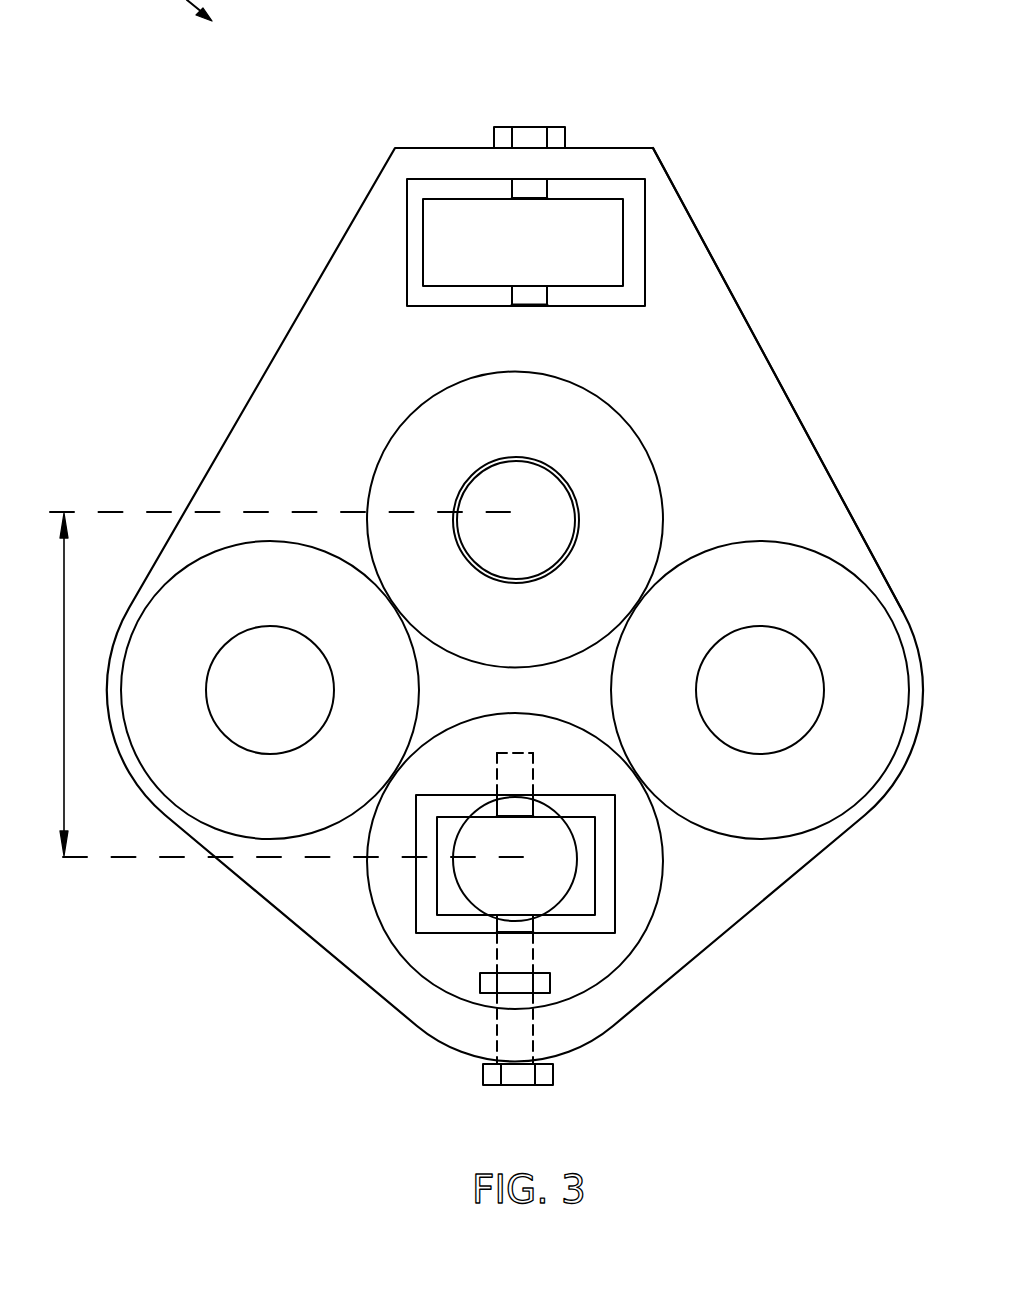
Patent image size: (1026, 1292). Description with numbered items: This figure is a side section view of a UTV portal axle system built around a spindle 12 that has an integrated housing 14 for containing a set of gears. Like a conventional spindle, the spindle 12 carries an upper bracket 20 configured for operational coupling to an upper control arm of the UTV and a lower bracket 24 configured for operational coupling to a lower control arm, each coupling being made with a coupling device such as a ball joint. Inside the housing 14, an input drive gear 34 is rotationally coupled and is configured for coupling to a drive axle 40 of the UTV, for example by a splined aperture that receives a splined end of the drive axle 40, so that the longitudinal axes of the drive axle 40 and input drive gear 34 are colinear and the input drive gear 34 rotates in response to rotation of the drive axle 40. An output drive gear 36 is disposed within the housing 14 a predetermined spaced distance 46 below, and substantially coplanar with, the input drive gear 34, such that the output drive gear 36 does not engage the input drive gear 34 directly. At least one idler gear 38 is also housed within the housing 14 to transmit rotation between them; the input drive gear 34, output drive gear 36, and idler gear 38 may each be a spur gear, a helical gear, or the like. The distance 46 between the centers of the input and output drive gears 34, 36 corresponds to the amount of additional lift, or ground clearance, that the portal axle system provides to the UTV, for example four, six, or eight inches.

The spindle 12 is at (318, 322).
The housing 14 is at (747, 318).
The upper bracket 20 is at (600, 158).
The lower bracket 24 is at (568, 935).
The input drive gear 34 is at (610, 447).
The output drive gear 36 is at (435, 965).
The idler gear 38 is at (213, 793).
The drive axle 40 is at (535, 540).
The predetermined spaced distance 46 is at (62, 661).